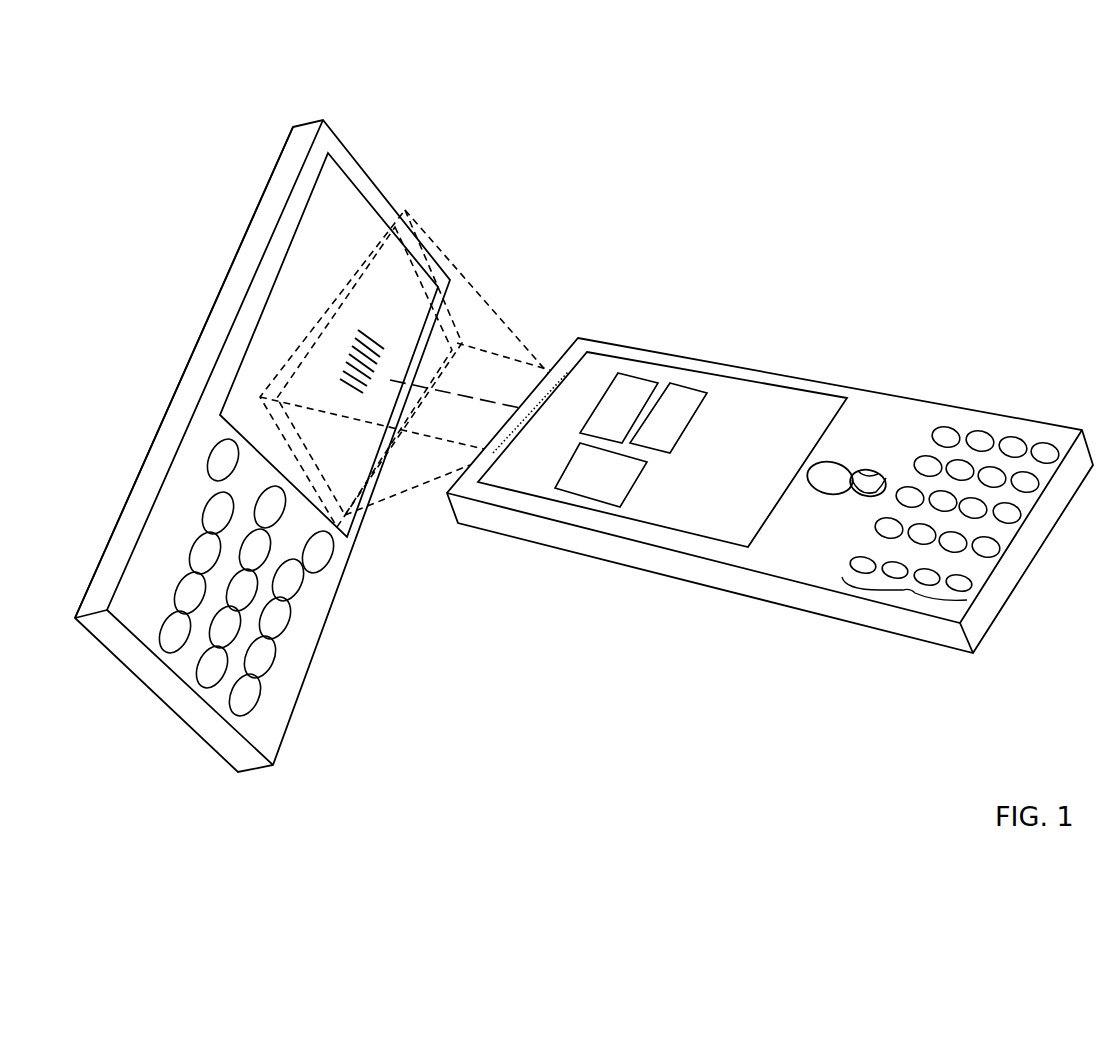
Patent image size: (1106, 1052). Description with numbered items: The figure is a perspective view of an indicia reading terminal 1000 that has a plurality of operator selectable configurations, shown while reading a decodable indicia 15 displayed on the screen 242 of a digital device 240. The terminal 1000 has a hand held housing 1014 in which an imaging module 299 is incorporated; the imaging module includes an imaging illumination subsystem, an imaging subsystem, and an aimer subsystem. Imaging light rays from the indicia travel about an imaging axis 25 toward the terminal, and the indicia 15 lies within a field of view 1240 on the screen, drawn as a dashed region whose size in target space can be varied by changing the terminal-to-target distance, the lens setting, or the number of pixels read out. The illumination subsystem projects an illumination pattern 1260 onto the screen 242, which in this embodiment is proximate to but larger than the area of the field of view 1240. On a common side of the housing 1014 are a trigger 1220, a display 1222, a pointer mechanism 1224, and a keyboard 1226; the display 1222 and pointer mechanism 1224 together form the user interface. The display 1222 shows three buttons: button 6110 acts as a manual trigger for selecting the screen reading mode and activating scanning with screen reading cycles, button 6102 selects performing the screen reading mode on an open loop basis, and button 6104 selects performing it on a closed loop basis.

The digital device 240 is at (314, 645).
The screen 242 is at (290, 247).
The illumination pattern 1260 is at (368, 255).
The field of view 1240 is at (365, 255).
The decodable indicia 15 is at (378, 336).
The imaging axis 25 is at (486, 395).
The imaging module 299 is at (548, 372).
The indicia reading terminal 1000 is at (960, 290).
The hand held housing 1014 is at (895, 418).
The display 1222 is at (727, 373).
The button 6102 is at (627, 373).
The button 6104 is at (685, 385).
The button 6110 is at (583, 497).
The trigger 1220 is at (813, 497).
The pointer mechanism 1224 is at (857, 500).
The keyboard 1226 is at (903, 590).